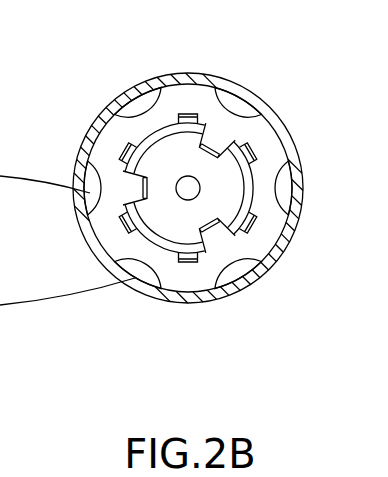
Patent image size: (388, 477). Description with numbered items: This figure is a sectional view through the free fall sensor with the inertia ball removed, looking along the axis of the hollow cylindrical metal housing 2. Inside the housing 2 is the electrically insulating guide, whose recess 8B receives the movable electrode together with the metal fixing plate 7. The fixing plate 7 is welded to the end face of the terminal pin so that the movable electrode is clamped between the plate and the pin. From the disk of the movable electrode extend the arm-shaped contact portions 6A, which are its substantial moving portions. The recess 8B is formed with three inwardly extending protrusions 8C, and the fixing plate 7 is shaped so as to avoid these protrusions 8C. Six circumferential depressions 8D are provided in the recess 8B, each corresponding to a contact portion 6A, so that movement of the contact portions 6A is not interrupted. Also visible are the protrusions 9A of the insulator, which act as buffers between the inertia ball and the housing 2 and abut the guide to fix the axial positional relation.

The housing 2 is at (88, 232).
The contact portions 6A is at (198, 113).
The fixing plate 7 is at (220, 188).
The recess 8B is at (168, 137).
The protrusions 8C is at (215, 142).
The circumferential depressions 8D is at (180, 113).
The protrusions 9A is at (240, 268).